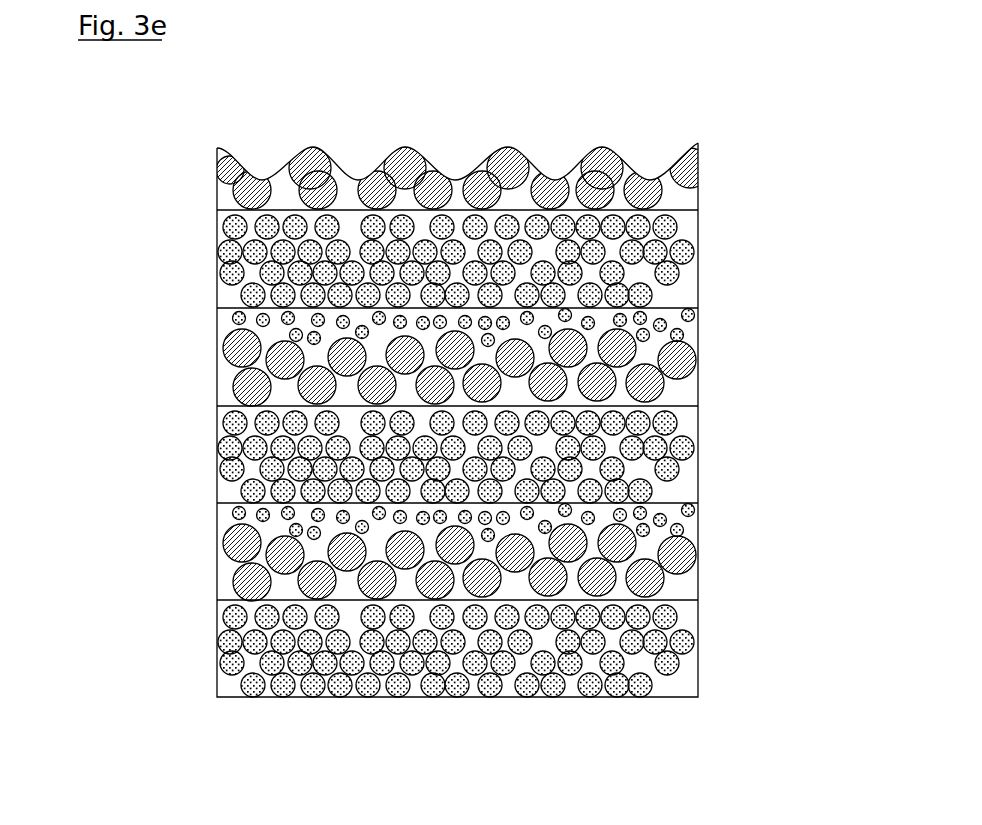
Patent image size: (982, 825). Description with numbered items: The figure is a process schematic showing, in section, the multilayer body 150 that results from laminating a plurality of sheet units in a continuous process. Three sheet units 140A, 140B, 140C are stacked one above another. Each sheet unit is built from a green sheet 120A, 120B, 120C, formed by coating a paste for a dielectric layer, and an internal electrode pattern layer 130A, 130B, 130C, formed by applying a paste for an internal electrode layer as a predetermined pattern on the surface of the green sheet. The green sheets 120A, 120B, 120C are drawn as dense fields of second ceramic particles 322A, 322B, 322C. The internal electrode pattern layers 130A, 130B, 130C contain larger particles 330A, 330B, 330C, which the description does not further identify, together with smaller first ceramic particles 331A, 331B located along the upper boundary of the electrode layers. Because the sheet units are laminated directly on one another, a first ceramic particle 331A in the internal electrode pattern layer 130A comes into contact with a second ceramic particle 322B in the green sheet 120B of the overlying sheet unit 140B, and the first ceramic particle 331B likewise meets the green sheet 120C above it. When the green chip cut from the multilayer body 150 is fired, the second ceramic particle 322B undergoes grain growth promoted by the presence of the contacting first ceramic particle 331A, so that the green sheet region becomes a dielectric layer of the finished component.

The multilayer body 150 is at (268, 743).
The sheet unit 140A is at (103, 506).
The sheet unit 140B is at (103, 311).
The sheet unit 140C is at (103, 145).
The green sheet 120A is at (190, 604).
The green sheet 120B is at (190, 409).
The green sheet 120C is at (190, 213).
The internal electrode pattern layer 130A is at (190, 507).
The internal electrode pattern layer 130B is at (190, 311).
The internal electrode pattern layer 130C is at (190, 145).
The second ceramic particle 322A is at (698, 635).
The second ceramic particle 322B is at (698, 440).
The second ceramic particle 322C is at (698, 245).
The large dense particles of first dense sublayer 330A is at (698, 560).
The large dense particles of second dense sublayer 330B is at (698, 358).
The large dense particles of third dense sublayer 330C is at (698, 163).
The first ceramic particle 331A is at (698, 518).
The first ceramic particle 331B is at (698, 325).